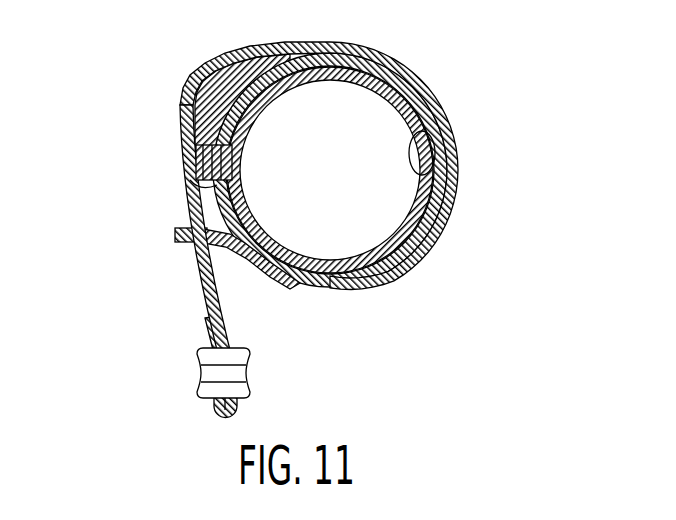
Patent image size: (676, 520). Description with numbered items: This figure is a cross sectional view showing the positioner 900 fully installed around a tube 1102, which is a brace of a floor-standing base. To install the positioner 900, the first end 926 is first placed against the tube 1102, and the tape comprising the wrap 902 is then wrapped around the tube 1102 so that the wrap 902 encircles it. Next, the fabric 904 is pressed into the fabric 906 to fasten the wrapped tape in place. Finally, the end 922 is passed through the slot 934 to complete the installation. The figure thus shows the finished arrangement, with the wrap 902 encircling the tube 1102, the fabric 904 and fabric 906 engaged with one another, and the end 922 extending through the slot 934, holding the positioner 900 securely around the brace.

The positioner 900 is at (292, 229).
The wrap 902 is at (430, 93).
The fabric 904 is at (178, 197).
The fabric 906 is at (190, 115).
The end 922 is at (221, 419).
The first end 926 is at (222, 145).
The slot 934 is at (228, 268).
The tube 1102 is at (435, 174).